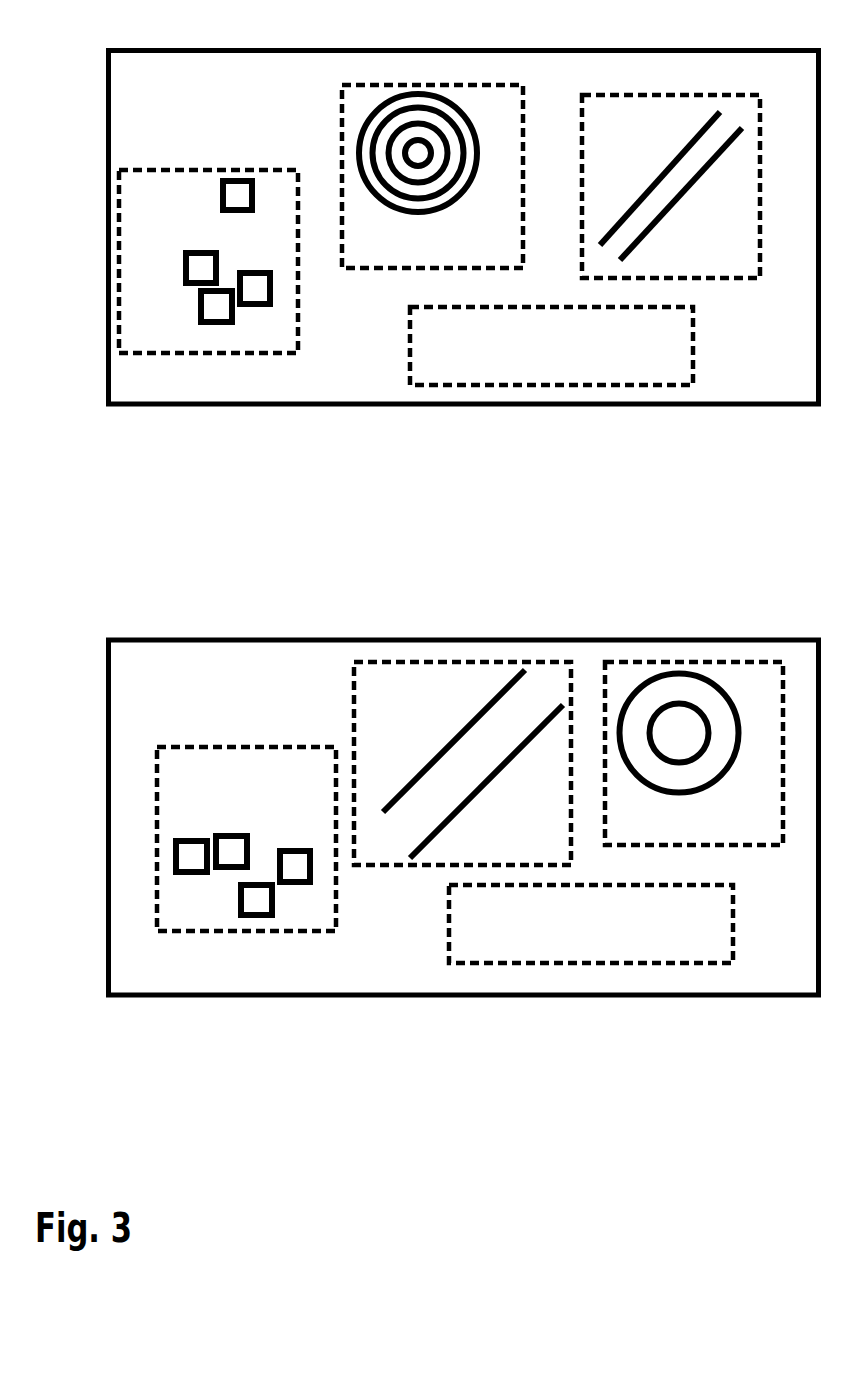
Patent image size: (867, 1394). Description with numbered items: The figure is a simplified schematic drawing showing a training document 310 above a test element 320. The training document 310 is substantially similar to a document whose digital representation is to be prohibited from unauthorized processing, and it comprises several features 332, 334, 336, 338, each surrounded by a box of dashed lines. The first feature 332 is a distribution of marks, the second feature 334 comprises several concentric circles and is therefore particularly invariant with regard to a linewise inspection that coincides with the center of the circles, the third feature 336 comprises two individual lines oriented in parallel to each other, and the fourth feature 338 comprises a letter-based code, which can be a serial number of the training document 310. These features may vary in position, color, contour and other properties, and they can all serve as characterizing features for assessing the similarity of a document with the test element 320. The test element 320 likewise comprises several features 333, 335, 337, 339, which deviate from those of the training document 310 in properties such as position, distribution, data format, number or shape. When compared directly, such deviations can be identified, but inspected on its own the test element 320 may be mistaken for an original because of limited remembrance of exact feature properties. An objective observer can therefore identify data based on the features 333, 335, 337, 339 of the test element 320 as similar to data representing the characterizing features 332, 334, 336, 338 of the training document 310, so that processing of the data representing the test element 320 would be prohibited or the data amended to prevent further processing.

The training document 310 is at (232, 130).
The test element 320 is at (215, 708).
The first feature 332 is at (197, 220).
The feature of the test element 333 is at (237, 800).
The second feature 334 is at (510, 255).
The feature of the test element 335 is at (772, 835).
The third feature 336 is at (745, 262).
The feature of the test element 337 is at (558, 850).
The fourth feature 338 is at (673, 357).
The feature of the test element 339 is at (713, 935).